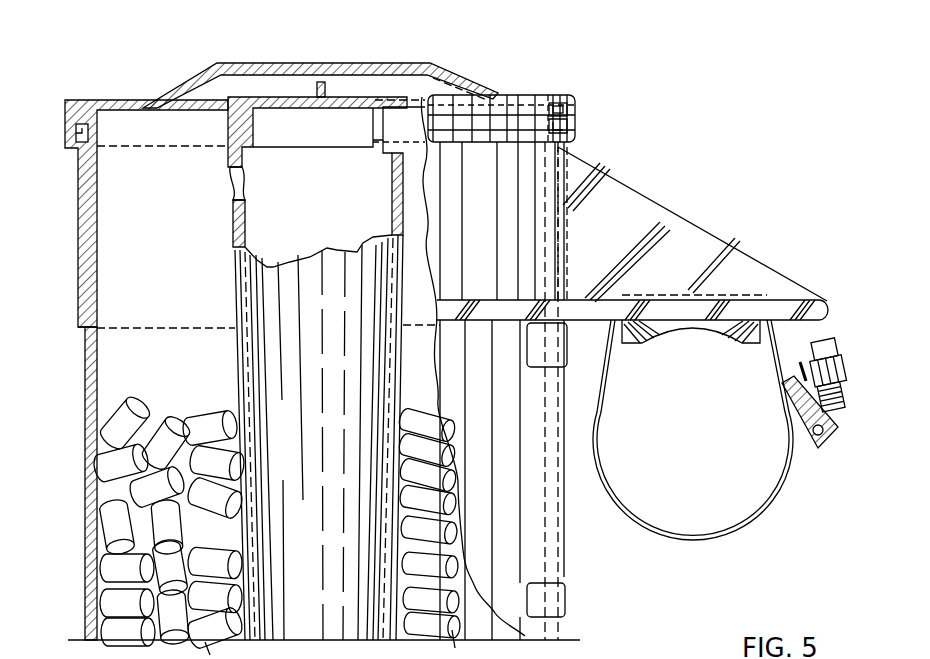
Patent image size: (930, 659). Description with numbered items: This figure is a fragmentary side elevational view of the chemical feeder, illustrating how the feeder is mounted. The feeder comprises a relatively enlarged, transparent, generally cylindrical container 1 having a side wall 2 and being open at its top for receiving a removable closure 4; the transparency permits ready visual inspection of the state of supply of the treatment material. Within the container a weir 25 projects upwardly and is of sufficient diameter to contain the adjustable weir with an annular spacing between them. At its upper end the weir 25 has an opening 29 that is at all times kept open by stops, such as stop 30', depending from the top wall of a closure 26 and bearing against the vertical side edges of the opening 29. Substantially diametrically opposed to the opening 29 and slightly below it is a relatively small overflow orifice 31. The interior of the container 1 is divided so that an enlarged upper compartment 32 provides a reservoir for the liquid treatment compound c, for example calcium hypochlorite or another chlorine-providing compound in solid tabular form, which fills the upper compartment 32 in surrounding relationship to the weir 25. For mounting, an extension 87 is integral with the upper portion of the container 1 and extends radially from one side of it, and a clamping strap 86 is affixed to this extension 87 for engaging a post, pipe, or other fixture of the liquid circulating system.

The container 1 is at (80, 263).
The side wall 2 is at (87, 408).
The removable closure 4 is at (573, 95).
The weir 25 is at (247, 493).
The closure 26 is at (343, 97).
The opening 29 is at (550, 137).
The stop 30' is at (623, 125).
The overflow orifice 31 is at (233, 184).
The upper compartment 32 is at (100, 487).
The clamping strap 86 is at (753, 520).
The extension 87 is at (747, 253).
The liquid treatment compound C is at (100, 522).